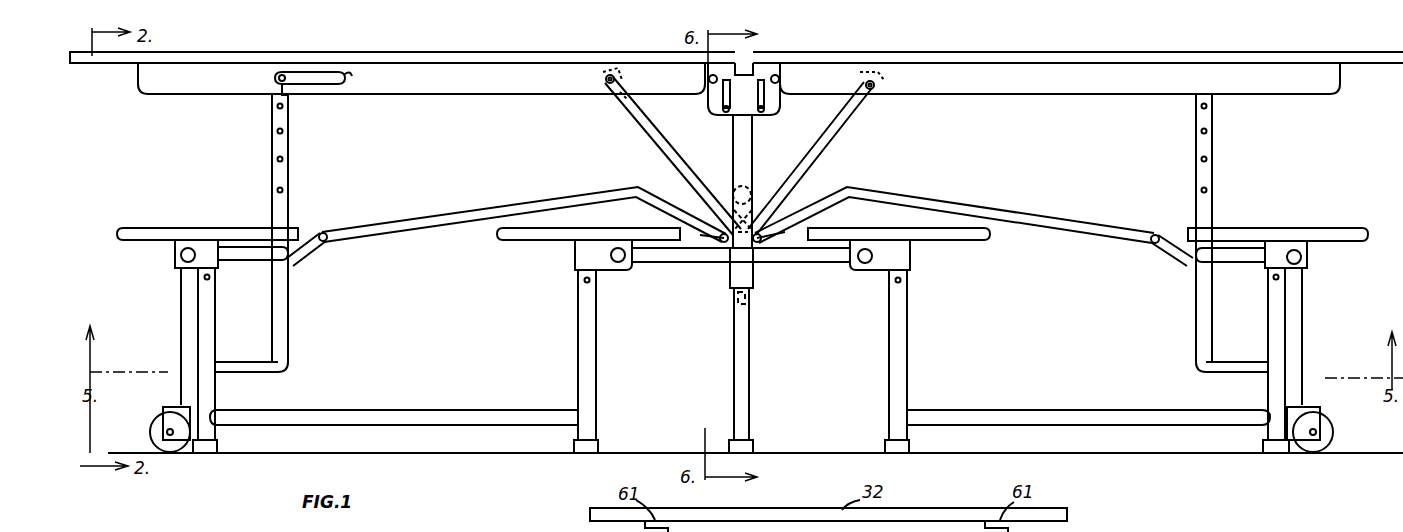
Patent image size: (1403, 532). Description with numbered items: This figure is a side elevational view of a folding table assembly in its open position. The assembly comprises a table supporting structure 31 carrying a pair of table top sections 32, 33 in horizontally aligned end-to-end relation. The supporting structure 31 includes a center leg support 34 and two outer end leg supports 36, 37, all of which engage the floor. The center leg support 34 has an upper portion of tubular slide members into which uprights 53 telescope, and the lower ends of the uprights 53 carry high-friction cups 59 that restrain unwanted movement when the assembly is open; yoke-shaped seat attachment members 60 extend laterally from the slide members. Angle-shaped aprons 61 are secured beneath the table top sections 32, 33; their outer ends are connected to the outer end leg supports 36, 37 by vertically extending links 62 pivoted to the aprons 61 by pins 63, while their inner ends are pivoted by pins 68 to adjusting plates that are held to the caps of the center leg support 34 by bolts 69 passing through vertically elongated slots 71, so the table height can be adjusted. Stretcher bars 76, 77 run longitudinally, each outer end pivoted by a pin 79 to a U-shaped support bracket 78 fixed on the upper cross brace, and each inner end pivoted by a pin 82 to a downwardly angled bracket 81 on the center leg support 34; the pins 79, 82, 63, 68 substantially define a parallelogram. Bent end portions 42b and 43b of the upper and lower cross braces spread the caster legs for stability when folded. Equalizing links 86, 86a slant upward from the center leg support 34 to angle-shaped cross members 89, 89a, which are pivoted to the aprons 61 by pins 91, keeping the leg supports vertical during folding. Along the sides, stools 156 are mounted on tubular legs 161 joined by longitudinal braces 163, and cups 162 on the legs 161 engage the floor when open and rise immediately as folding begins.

The table supporting structure 31 is at (138, 160).
The table top section 32 is at (392, 54).
The table top section 33 is at (965, 54).
The center leg support 34 is at (626, 158).
The outer end leg support 36 is at (254, 196).
The outer end leg support 37 is at (1178, 186).
The end portion of upper cross brace 42b is at (244, 260).
The end portion of lower cross brace 43b is at (250, 360).
The upright 53 is at (750, 372).
The cup 59 is at (752, 446).
The seat attachment member 60 is at (792, 264).
The apron 61 is at (450, 95).
The link 62 is at (290, 150).
The pin 63 is at (272, 86).
The pin 68 is at (776, 78).
The bolt 69 is at (720, 116).
The slot 71 is at (765, 106).
The stretcher bar 76 is at (418, 208).
The stretcher bar 77 is at (1000, 210).
The support bracket 78 is at (305, 250).
The pin 79 is at (323, 233).
The bracket 81 is at (742, 196).
The pin 82 is at (720, 252).
The link 86 is at (640, 118).
The link 86a is at (840, 124).
The cross member 89 is at (618, 76).
The cross member 89a is at (870, 82).
The pin 91 is at (602, 80).
The stool 156 is at (166, 228).
The leg 161 is at (578, 345).
The cup 162 is at (215, 447).
The brace 163 is at (384, 408).